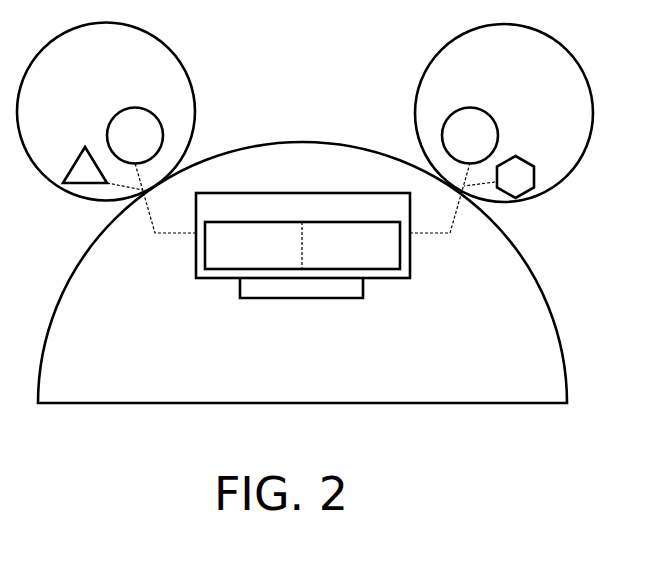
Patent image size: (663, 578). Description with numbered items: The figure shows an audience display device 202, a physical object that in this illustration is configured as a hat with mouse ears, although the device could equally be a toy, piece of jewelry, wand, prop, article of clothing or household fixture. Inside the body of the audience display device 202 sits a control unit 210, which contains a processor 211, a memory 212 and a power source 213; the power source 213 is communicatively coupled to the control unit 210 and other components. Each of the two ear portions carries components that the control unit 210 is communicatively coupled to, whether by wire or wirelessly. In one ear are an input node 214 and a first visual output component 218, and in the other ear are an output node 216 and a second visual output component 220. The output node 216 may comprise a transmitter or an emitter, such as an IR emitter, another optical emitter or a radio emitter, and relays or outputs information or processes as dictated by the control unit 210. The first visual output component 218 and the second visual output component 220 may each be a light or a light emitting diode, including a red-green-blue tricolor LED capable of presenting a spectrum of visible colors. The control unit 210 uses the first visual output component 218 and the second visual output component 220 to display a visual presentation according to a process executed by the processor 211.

The audience display device 202 is at (271, 366).
The control unit 210 is at (392, 216).
The processor 211 is at (228, 258).
The memory 212 is at (333, 258).
The power source 213 is at (240, 297).
The input node 214 is at (71, 171).
The output node 216 is at (531, 164).
The first visual output component 218 is at (135, 108).
The second visual output component 220 is at (494, 130).